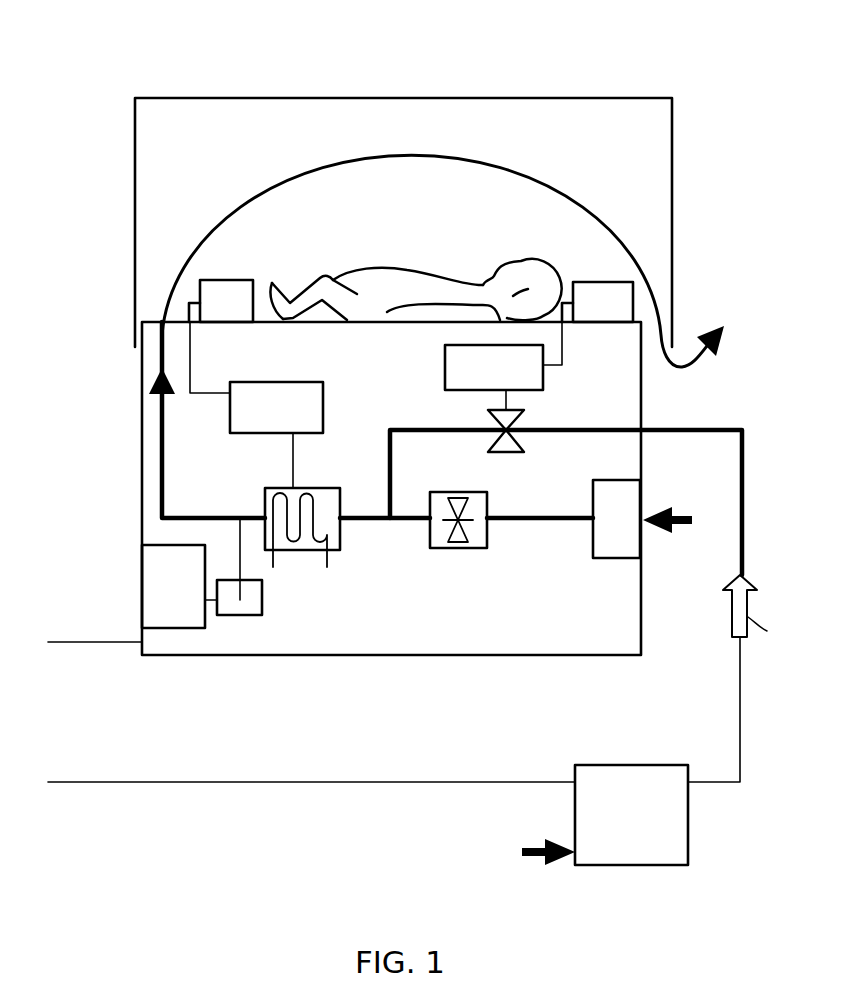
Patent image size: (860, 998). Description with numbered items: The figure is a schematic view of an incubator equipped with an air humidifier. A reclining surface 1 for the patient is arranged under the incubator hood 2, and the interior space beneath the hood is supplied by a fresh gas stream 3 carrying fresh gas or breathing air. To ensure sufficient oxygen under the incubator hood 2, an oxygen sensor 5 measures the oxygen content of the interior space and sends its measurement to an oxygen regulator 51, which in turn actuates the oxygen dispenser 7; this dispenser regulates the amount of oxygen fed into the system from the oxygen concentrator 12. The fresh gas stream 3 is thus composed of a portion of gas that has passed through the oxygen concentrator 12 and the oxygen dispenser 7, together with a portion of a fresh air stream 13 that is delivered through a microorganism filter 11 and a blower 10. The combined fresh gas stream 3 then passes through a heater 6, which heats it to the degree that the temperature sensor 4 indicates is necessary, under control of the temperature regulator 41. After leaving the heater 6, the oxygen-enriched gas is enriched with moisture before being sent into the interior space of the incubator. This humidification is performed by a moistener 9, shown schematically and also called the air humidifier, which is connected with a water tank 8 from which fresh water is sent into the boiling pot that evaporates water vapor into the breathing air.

The reclining surface 1 is at (553, 322).
The incubator hood 2 is at (188, 98).
The fresh gas stream 3 is at (472, 147).
The temperature sensor 4 is at (212, 296).
The oxygen sensor 5 is at (623, 293).
The heater 6 is at (307, 550).
The oxygen dispenser 7 is at (515, 452).
The water tank 8 is at (160, 586).
The moistener 9 is at (247, 609).
The blower 10 is at (460, 548).
The microorganism filter 11 is at (607, 546).
The oxygen concentrator 12 is at (645, 838).
The fresh air stream 13 is at (678, 528).
The temperature regulator 41 is at (247, 432).
The oxygen regulator 51 is at (527, 373).